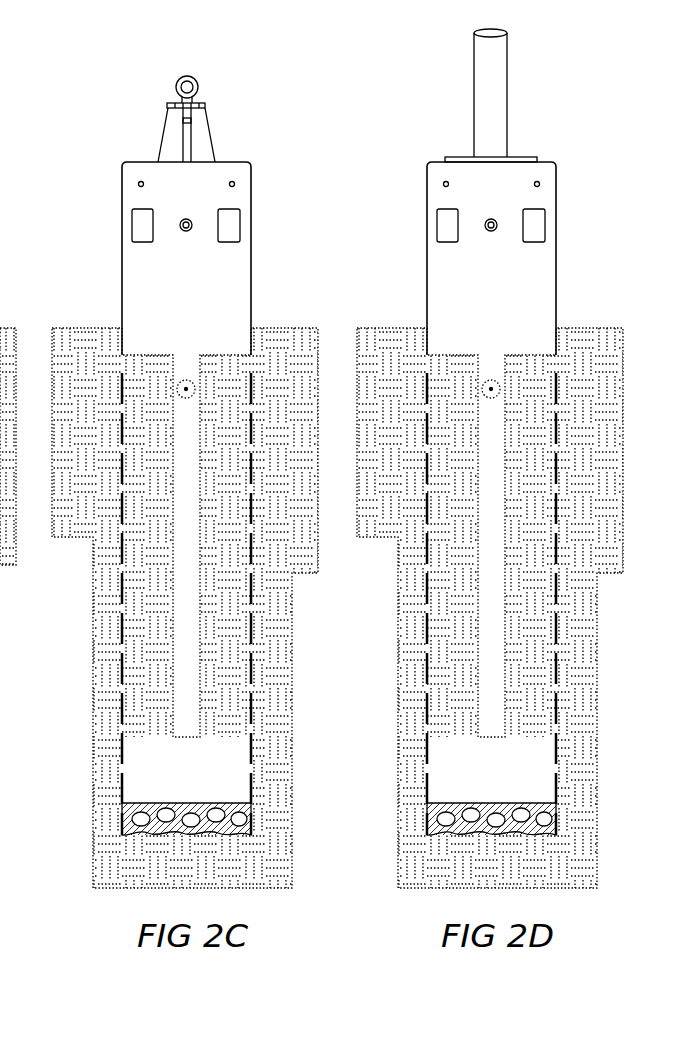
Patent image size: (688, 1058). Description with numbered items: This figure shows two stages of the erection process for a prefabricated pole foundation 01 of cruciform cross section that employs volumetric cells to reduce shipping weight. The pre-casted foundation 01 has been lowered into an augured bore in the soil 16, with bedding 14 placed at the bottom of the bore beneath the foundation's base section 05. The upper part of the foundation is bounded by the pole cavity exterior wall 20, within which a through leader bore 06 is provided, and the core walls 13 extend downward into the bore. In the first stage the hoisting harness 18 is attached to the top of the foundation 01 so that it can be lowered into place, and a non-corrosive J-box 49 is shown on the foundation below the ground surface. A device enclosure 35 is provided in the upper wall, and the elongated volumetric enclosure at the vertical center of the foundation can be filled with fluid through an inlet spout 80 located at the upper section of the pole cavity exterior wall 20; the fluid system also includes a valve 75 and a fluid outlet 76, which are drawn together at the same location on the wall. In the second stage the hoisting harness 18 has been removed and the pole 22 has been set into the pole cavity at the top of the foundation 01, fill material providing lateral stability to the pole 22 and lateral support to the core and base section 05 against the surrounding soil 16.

In FIG. 2C, the pre-casted foundation 01 is at (100, 134).
In FIG. 2D, the pre-casted foundation 01 is at (378, 138).
In FIG. 2C, the base section 05 is at (147, 772).
In FIG. 2D, the base section 05 is at (458, 770).
In FIG. 2C, the through leader bore 06 is at (236, 184).
In FIG. 2D, the through leader bore 06 is at (533, 186).
In FIG. 2C, the core walls 13 is at (185, 628).
In FIG. 2D, the core walls 13 is at (541, 604).
In FIG. 2C, the bedding 14 is at (253, 830).
In FIG. 2D, the bedding 14 is at (544, 821).
In FIG. 2C, the soil 16 is at (118, 840).
In FIG. 2D, the soil 16 is at (474, 608).
In FIG. 2C, the hoisting harness 18 is at (199, 89).
In FIG. 2C, the pole cavity exterior wall 20 is at (147, 290).
In FIG. 2D, the pole cavity exterior wall 20 is at (458, 258).
In FIG. 2D, the pole 22 is at (461, 95).
In FIG. 2C, the device enclosure 35 is at (241, 226).
In FIG. 2D, the device enclosure 35 is at (529, 225).
In FIG. 2C, the non-corrosive J-box 49 is at (195, 390).
In FIG. 2D, the non-corrosive J-box 49 is at (573, 396).
In FIG. 2C, the valve 75 is at (279, 248).
In FIG. 2D, the valve 75 is at (584, 248).
In FIG. 2C, the fluid outlet 76 is at (279, 248).
In FIG. 2D, the fluid outlet 76 is at (584, 248).
In FIG. 2C, the inlet spout 80 is at (192, 227).
In FIG. 2D, the inlet spout 80 is at (584, 248).